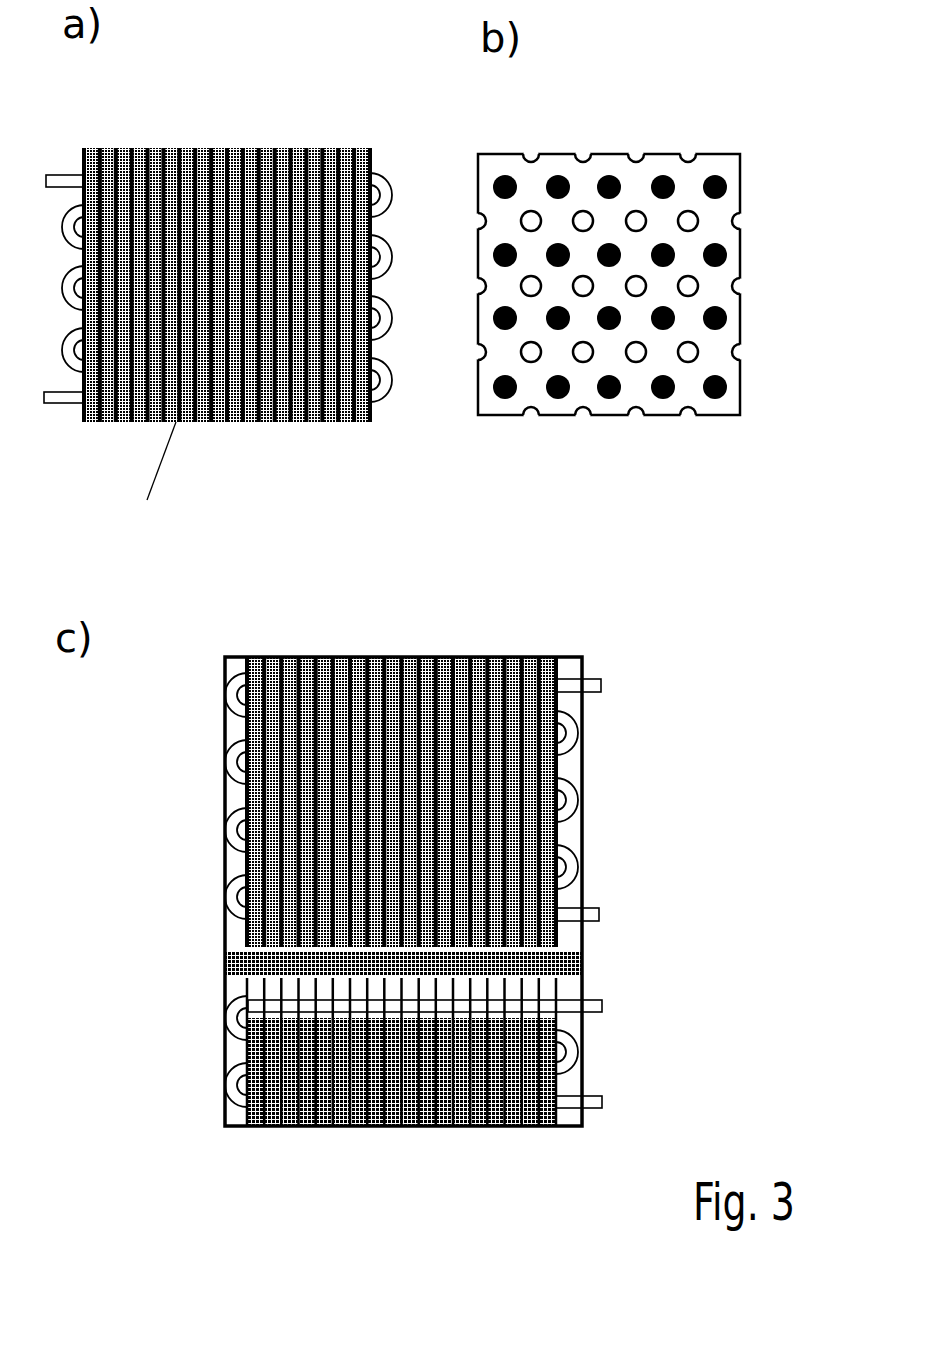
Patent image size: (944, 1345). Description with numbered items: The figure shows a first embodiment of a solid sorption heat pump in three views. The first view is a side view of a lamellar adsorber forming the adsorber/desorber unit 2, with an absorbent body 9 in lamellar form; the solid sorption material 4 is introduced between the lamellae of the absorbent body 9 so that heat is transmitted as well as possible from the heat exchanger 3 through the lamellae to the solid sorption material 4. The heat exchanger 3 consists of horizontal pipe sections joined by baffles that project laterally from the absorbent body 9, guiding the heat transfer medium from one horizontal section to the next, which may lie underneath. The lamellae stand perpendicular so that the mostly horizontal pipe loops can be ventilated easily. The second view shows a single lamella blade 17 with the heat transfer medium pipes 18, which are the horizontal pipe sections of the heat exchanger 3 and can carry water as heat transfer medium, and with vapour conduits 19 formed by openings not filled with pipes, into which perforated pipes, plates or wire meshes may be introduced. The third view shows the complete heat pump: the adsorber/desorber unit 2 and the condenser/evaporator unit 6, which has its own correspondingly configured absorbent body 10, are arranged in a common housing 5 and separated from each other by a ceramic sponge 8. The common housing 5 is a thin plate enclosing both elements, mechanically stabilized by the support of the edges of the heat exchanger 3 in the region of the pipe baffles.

The adsorber/desorber unit 2 is at (395, 805).
The heat exchanger 3 is at (254, 290).
The solid sorption material 4 is at (237, 278).
The common housing 5 is at (398, 912).
The condenser/evaporator unit 6 is at (401, 1091).
The ceramic sponge 8 is at (338, 963).
The absorbent body 9 is at (322, 406).
The absorbent body 10 is at (252, 1125).
The lamella blade 17 is at (676, 281).
The heat transfer medium pipes 18 is at (670, 393).
The vapour conduits 19 is at (687, 284).